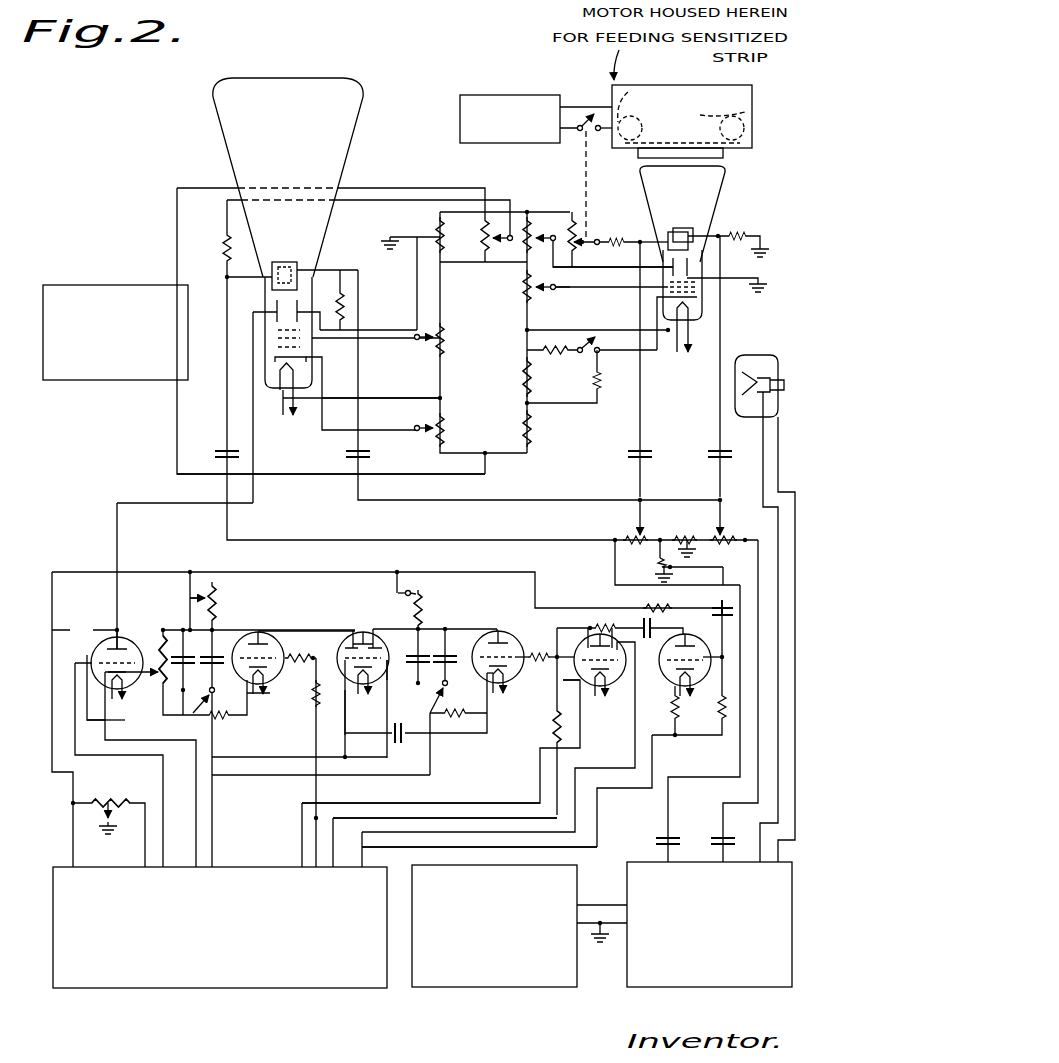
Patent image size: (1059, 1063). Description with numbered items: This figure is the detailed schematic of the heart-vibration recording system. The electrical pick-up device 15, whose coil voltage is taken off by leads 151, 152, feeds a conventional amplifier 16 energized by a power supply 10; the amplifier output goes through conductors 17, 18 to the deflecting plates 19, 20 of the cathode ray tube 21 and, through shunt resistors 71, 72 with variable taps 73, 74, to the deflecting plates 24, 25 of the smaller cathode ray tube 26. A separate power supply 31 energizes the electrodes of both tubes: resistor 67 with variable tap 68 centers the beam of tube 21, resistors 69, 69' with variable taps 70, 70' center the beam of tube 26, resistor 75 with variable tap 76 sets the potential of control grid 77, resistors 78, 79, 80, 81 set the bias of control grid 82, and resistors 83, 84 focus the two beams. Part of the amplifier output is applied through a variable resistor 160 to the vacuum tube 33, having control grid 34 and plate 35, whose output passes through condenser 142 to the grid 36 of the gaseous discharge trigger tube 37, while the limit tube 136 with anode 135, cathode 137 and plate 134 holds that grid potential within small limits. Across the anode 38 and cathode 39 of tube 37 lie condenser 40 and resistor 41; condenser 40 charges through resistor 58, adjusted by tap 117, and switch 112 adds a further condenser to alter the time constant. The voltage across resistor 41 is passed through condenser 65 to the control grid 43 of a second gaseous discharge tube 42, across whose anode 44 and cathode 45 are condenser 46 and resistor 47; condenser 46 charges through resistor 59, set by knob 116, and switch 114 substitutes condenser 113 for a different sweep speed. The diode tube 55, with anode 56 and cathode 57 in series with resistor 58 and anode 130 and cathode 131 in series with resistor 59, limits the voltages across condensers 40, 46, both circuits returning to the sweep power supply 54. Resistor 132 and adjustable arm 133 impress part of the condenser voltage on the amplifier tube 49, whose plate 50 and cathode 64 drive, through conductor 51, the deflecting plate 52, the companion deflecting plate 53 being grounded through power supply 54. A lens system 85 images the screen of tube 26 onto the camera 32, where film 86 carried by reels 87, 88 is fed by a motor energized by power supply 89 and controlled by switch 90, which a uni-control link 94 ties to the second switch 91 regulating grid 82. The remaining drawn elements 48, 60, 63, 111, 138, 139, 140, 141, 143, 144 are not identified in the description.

The power supply 10 is at (505, 989).
The electrical pick-up device 15 is at (762, 347).
The amplifier 16 is at (692, 988).
The conductor 17 is at (358, 275).
The conductor 18 is at (226, 400).
The deflecting plate 19 is at (300, 262).
The deflecting plate 20 is at (270, 280).
The cathode ray tube 21 is at (336, 170).
The deflecting plate 24 is at (693, 233).
The deflecting plate 25 is at (640, 242).
The cathode ray tube 26 is at (715, 203).
The power supply 31 is at (104, 381).
The camera 32 is at (752, 112).
The vacuum tube 33 is at (672, 700).
The control grid 34 is at (681, 669).
The plate 35 is at (688, 637).
The grid 36 is at (511, 670).
The gaseous discharge tube 37 is at (522, 638).
The anode 38 is at (499, 632).
The cathode 39 is at (505, 699).
The condenser 40 is at (446, 655).
The resistor 41 is at (461, 713).
The second gaseous discharge tube 42 is at (283, 650).
The control grid 43 is at (281, 670).
The anode 44 is at (260, 632).
The cathode 45 is at (268, 694).
The condenser 46 is at (216, 651).
The resistor 47 is at (227, 719).
The cathode connection 48 is at (126, 690).
The amplifier tube 49 is at (128, 625).
The plate 50 is at (92, 641).
The conductor 51 is at (163, 505).
The deflecting plate 52 is at (262, 306).
The deflecting plate 53 is at (338, 296).
The sweep power supply 54 is at (238, 990).
The diode tube 55 is at (358, 641).
The anode 56 is at (388, 651).
The cathode 57 is at (386, 681).
The resistor 58 is at (413, 590).
The resistor 59 is at (215, 601).
The resistor 60 is at (719, 708).
The resistor 63 is at (315, 712).
The cathode 64 is at (103, 721).
The condenser 65 is at (401, 741).
The resistor 67 is at (483, 243).
The variable tap 68 is at (505, 242).
The resistor 69 is at (490, 215).
The resistor 69' is at (569, 227).
The variable tap 70 is at (598, 242).
The variable tap 70' is at (600, 221).
The shunt resistor 71 is at (718, 536).
The shunt resistor 72 is at (646, 526).
The variable tap 73 is at (727, 522).
The variable tap 74 is at (637, 526).
The resistor 75 is at (446, 428).
The variable tap 76 is at (417, 436).
The control grid 77 is at (308, 360).
The resistor 78 is at (531, 430).
The resistor 79 is at (522, 378).
The resistor 80 is at (601, 392).
The resistor 81 is at (553, 356).
The control grid 82 is at (700, 292).
The resistor 83 is at (446, 340).
The resistor 84 is at (524, 290).
The lens system 85 is at (726, 153).
The photographic film 86 is at (681, 128).
The reel 87 is at (634, 86).
The reel 88 is at (685, 120).
The power supply 89 is at (460, 122).
The starting and stopping switch 90 is at (590, 133).
The second switch 91 is at (594, 338).
The uni-control link 94 is at (590, 183).
The capacitor 111 is at (421, 650).
The switch 112 is at (444, 686).
The condenser 113 is at (183, 641).
The switch 114 is at (188, 705).
The knob 116 is at (200, 598).
The tap 117 is at (396, 583).
The anode 130 is at (350, 646).
The cathode 131 is at (346, 695).
The resistor 132 is at (157, 650).
The adjustable arm 133 is at (125, 730).
The plate 134 is at (615, 619).
The anode 135 is at (583, 628).
The limit tube 136 is at (549, 657).
The cathode 137 is at (573, 687).
The resistor 138 is at (566, 713).
The conductor 139 is at (598, 806).
The conductor 140 is at (558, 758).
The conductor 141 is at (421, 789).
The condenser 142 is at (662, 615).
The resistor 143 is at (655, 608).
The capacitor 144 is at (712, 611).
The lead 151 is at (764, 432).
The lead 152 is at (781, 466).
The variable resistor 160 is at (661, 563).